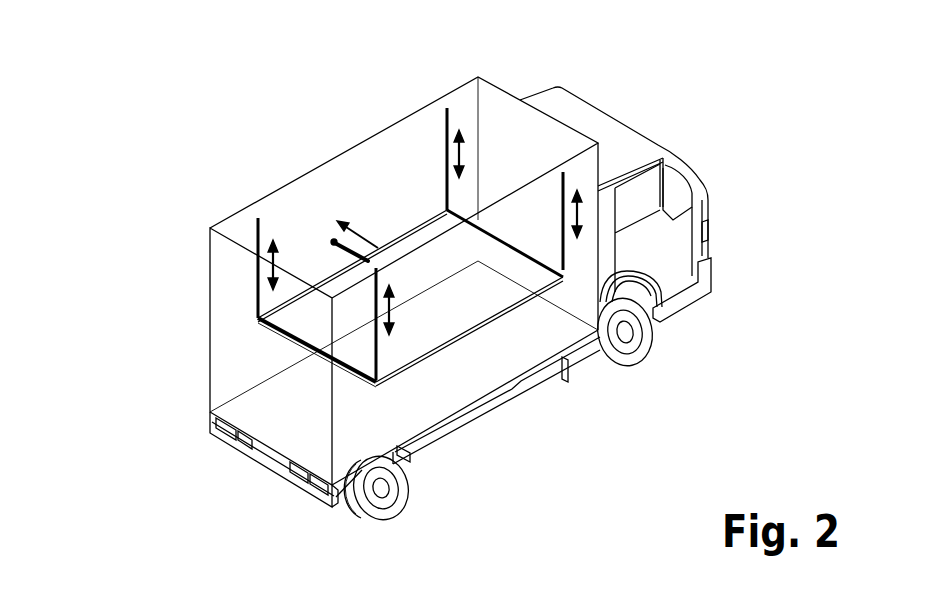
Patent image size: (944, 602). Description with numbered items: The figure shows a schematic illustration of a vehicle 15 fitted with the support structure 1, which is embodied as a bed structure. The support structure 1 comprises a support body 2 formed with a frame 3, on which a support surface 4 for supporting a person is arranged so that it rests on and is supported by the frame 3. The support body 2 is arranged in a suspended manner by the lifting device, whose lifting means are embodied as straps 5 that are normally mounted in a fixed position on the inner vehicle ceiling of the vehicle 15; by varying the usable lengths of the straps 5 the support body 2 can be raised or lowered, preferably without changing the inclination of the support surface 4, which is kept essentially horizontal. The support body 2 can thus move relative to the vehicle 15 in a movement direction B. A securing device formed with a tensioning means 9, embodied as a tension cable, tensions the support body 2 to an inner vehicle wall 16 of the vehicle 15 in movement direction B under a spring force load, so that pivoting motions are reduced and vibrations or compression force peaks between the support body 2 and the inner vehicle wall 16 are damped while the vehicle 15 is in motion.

The vehicle 15 is at (100, 132).
The support structure 1 is at (302, 164).
The inner vehicle wall 16 is at (373, 173).
The support surface 4 is at (434, 284).
The tensioning means 9 is at (350, 258).
The support body 2 is at (405, 375).
The frame 3 is at (463, 330).
The straps 5 is at (563, 195).